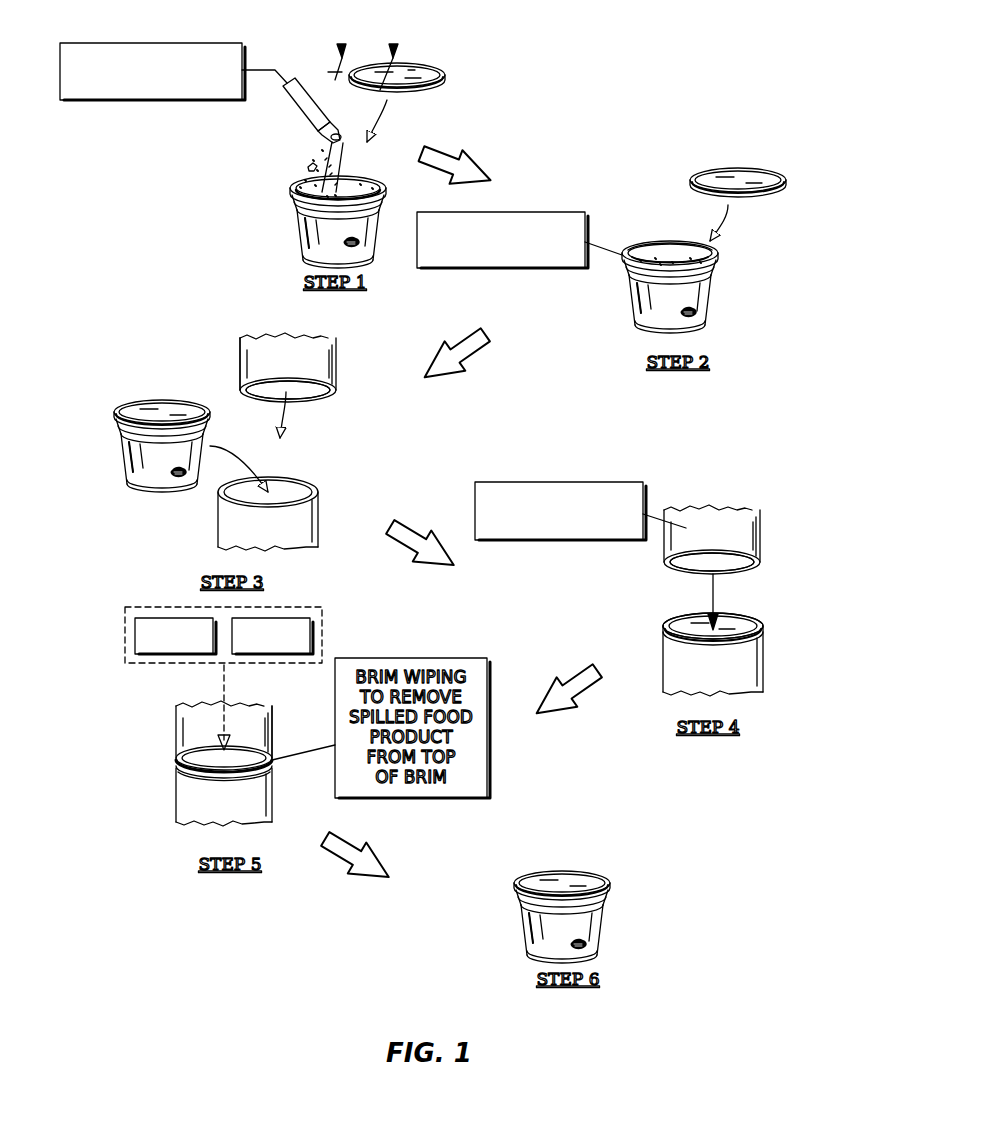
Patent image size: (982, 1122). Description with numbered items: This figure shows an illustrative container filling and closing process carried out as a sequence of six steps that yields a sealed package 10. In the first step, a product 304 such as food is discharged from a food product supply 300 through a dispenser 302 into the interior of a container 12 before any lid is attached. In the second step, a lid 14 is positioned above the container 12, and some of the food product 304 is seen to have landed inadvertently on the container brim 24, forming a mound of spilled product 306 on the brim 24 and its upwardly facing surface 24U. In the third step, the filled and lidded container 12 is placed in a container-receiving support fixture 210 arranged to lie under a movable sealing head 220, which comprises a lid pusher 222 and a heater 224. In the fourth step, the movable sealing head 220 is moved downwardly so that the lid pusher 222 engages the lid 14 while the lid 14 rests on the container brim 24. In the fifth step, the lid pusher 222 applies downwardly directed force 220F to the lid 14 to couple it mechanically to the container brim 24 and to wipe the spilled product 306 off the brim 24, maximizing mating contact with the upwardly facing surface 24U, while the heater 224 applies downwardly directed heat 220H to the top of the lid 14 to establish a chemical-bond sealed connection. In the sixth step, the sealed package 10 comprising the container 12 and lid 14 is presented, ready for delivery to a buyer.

The package 10 is at (684, 858).
The container 12 is at (290, 227).
The lid 14 is at (447, 63).
The brim 24 is at (733, 252).
The upwardly facing surface 24U is at (649, 243).
The container-receiving support fixture 210 is at (330, 516).
The movable sealing head 220 is at (350, 374).
The downwardly directed force 220F is at (135, 638).
The downwardly directed heat 220H is at (311, 636).
The lid pusher 222 is at (240, 361).
The heater 224 is at (300, 352).
The food product supply 300 is at (145, 100).
The dispenser 302 is at (296, 112).
The product 304 is at (348, 172).
The spilled product 306 is at (510, 270).